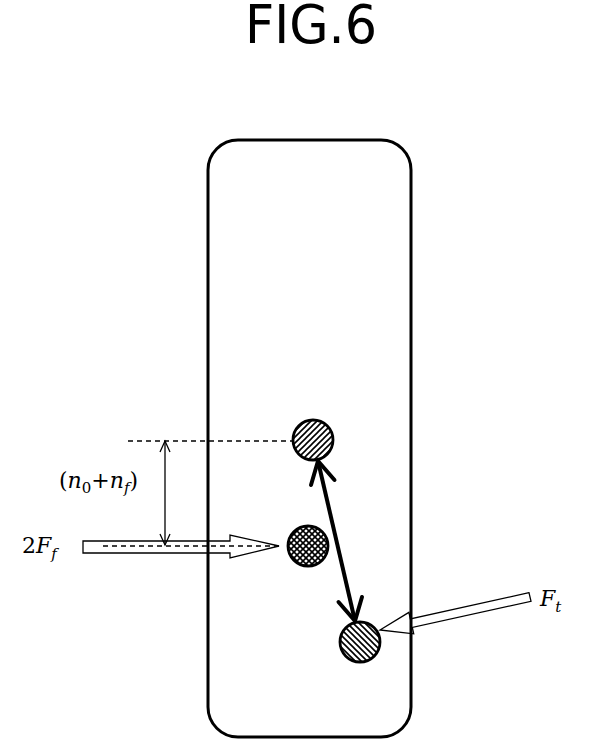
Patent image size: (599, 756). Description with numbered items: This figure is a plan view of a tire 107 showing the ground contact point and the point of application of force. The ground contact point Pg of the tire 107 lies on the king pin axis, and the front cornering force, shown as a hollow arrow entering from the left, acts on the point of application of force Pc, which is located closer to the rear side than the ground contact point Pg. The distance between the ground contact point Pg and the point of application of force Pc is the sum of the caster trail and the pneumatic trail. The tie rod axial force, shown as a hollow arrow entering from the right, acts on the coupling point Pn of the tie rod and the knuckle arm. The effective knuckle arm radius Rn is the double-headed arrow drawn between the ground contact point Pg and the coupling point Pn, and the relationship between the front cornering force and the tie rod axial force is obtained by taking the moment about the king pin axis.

The tire 107 is at (323, 140).
The ground contact point Pg is at (327, 425).
The point of application of force Pc is at (295, 561).
The coupling point Pn is at (381, 647).
The effective knuckle arm radius Rn is at (340, 550).